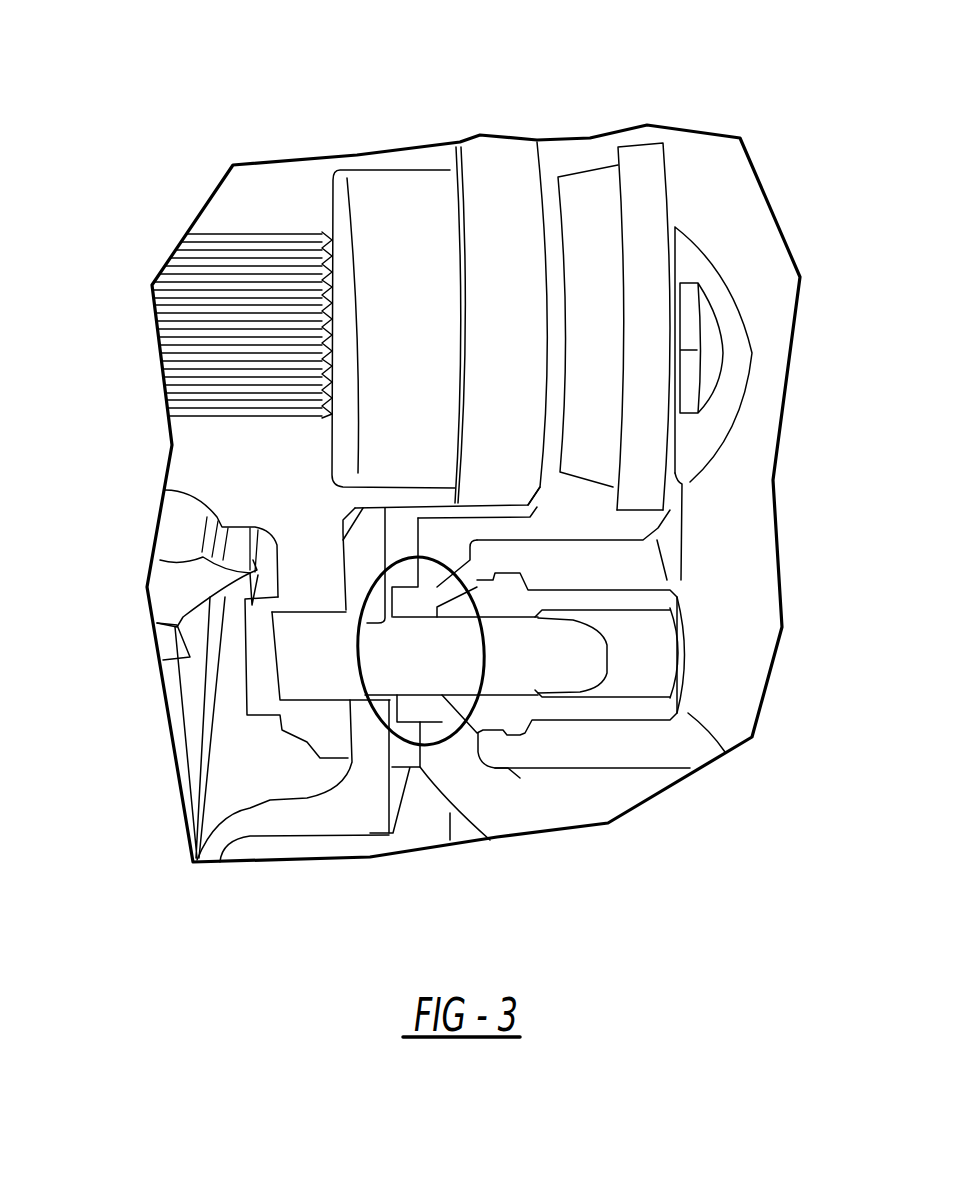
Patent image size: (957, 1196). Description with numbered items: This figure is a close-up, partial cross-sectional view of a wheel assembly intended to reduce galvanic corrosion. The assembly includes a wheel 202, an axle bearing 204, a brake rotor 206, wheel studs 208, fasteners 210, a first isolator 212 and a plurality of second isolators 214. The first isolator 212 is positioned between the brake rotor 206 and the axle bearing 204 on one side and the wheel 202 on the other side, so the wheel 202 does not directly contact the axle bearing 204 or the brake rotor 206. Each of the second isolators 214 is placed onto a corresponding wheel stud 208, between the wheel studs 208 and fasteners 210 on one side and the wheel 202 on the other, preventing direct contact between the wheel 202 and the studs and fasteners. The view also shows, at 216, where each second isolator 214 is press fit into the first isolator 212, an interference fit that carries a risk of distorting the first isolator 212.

The wheel 202 is at (627, 525).
The axle bearing 204 is at (273, 482).
The brake rotor 206 is at (288, 820).
The wheel studs 208 is at (290, 667).
The fasteners 210 is at (617, 713).
The first isolator 212 is at (520, 212).
The second isolators 214 is at (442, 722).
The press fit 216 is at (441, 742).